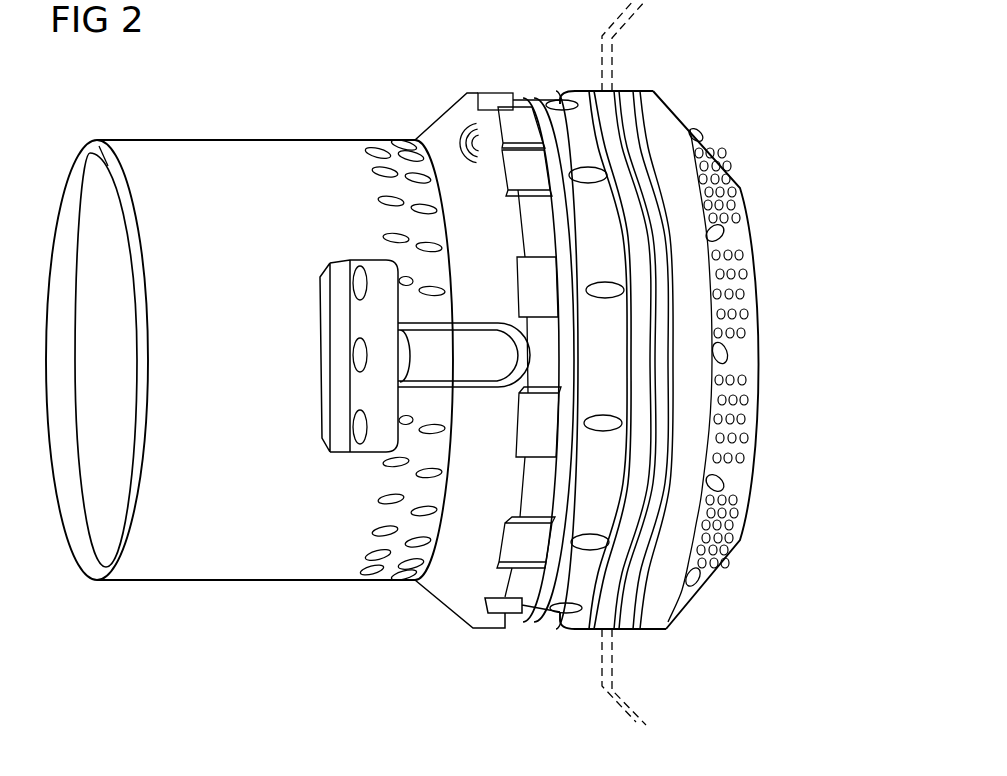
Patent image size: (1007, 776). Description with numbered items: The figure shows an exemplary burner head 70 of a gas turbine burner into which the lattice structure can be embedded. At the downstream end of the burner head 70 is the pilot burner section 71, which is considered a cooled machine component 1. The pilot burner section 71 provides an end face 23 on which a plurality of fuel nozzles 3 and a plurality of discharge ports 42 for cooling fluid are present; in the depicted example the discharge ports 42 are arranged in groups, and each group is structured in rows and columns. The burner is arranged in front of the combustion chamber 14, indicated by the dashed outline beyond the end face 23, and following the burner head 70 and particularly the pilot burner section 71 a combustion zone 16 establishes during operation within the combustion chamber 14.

The cooled machine component 1 is at (740, 475).
The fuel nozzles 3 is at (698, 134).
The combustion chamber 14 is at (637, 13).
The combustion zone 16 is at (857, 383).
The end face 23 is at (740, 237).
The discharge ports 42 is at (740, 395).
The burner head 70 is at (256, 570).
The pilot burner section 71 is at (747, 353).